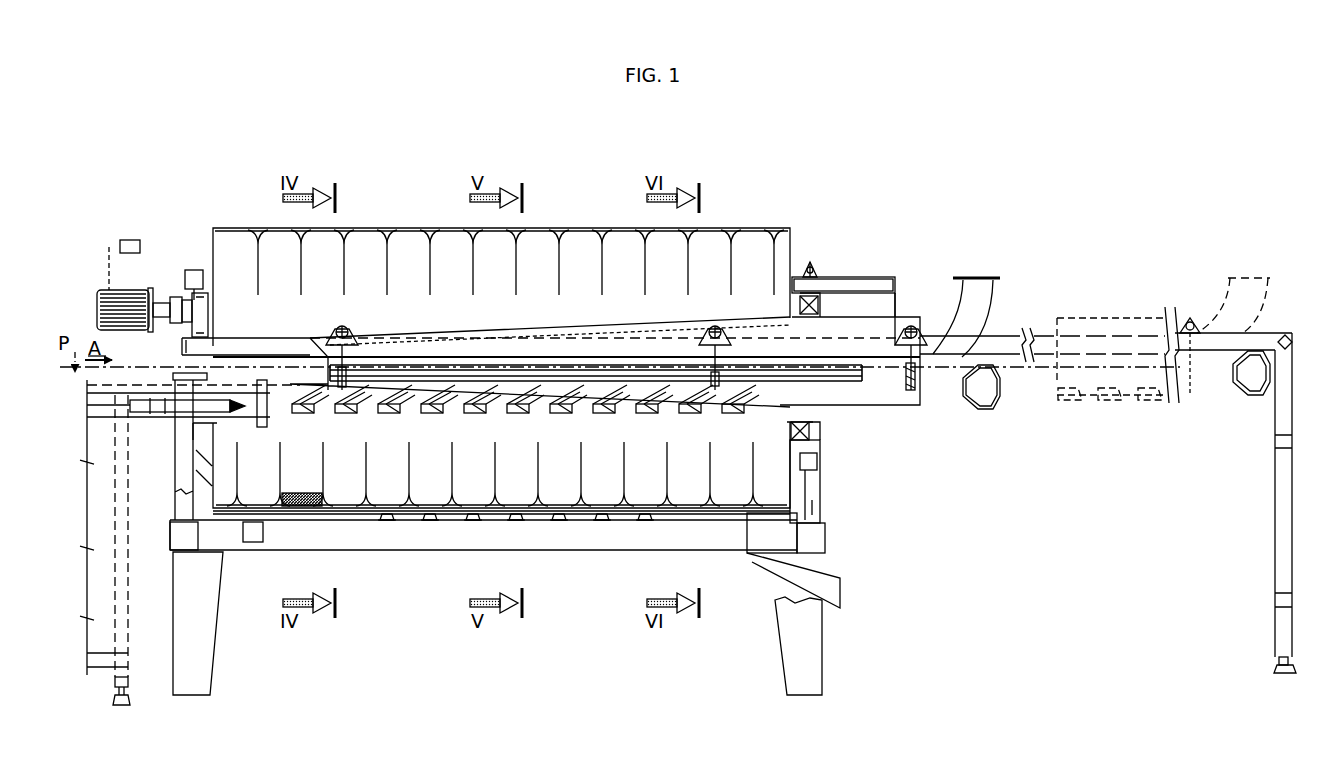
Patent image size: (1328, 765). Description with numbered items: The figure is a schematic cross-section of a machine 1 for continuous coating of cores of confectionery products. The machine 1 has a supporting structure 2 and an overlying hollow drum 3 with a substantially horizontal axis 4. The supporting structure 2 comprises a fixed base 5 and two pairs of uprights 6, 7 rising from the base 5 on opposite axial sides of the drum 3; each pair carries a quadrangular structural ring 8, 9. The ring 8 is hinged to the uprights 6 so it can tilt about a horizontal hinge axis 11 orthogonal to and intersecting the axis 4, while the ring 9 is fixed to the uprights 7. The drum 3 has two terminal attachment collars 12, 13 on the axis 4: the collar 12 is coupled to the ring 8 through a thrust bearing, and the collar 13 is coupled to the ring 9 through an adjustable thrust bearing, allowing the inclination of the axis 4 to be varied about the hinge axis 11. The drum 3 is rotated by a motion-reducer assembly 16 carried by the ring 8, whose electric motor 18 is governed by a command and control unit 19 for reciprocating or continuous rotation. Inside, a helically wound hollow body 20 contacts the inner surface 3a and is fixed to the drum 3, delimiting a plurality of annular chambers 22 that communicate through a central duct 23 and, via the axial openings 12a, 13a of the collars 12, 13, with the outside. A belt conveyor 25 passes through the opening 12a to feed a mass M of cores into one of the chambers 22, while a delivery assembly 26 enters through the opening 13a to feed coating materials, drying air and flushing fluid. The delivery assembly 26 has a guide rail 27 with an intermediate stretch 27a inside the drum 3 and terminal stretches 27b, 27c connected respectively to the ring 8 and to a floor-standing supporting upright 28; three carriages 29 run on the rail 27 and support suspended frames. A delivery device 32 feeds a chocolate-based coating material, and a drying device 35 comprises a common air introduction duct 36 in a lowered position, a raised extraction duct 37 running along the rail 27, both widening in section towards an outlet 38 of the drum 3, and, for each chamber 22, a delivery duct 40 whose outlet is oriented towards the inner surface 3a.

The machine 1 is at (838, 166).
The supporting structure 2 is at (256, 644).
The hollow drum 3 is at (535, 200).
The inner surface 3a is at (371, 500).
The axis 4 is at (262, 340).
The fixed base 5 is at (398, 543).
The pair of uprights 6 is at (170, 490).
The pair of uprights 7 is at (834, 488).
The structural ring 8 is at (194, 268).
The structural ring 9 is at (824, 461).
The hinge axis 11 is at (180, 363).
The terminal attachment collar 12 is at (182, 300).
The axial opening 12a is at (196, 420).
The terminal attachment collar 13 is at (822, 300).
The axial opening 13a is at (812, 413).
The motion-reducer assembly 16 is at (100, 290).
The electric motor 18 is at (115, 318).
The command and control unit 19 is at (128, 240).
The annular hollow body 20 is at (350, 248).
The annular chambers 22 is at (315, 508).
The central duct 23 is at (383, 431).
The belt conveyor 25 is at (100, 423).
The delivery assembly 26 is at (909, 306).
The guide rail 27 is at (270, 338).
The intermediate stretch 27a is at (293, 344).
The terminal stretch 27b is at (190, 339).
The terminal stretch 27c is at (1000, 345).
The supporting upright 28 is at (1274, 472).
The carriages 29 is at (346, 326).
The delivery device 32 is at (842, 391).
The drying device 35 is at (652, 441).
The common air introduction duct 36 is at (940, 400).
The extraction duct 37 is at (980, 282).
The outlet 38 is at (860, 566).
The delivery duct 40 is at (473, 406).
The mass of cores M is at (290, 470).